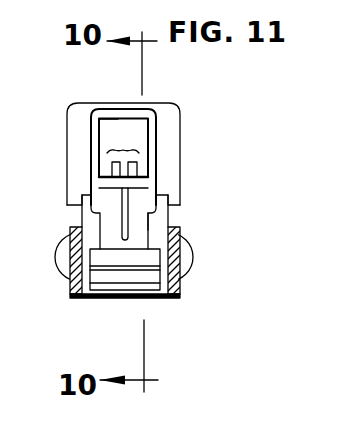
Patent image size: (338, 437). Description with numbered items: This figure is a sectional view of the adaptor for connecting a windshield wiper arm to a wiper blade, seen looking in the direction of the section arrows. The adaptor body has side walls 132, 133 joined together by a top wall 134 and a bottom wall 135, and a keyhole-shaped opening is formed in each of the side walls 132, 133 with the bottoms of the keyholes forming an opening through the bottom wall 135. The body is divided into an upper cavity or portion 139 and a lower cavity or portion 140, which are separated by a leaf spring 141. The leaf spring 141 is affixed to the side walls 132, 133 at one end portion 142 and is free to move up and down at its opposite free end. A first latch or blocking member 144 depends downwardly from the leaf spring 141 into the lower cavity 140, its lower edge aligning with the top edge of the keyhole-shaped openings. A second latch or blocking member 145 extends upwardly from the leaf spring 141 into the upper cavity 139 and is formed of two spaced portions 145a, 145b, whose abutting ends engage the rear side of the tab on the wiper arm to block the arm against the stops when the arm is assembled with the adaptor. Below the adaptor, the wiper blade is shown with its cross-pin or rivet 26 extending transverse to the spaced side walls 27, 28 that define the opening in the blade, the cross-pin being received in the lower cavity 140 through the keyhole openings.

The cross-pin 26 is at (108, 268).
The side wall 27 is at (76, 291).
The side wall 28 is at (176, 284).
The side wall 132 is at (127, 147).
The side wall 133 is at (91, 124).
The top wall 134 is at (123, 118).
The bottom wall 135 is at (125, 300).
The upper cavity 139 is at (110, 122).
The lower cavity 140 is at (78, 231).
The leaf spring 141 is at (118, 188).
The affixed end portion 142 is at (103, 179).
The first latch or blocking member 144 is at (152, 216).
The second latch or blocking member 145 is at (181, 112).
The spaced portion 145a is at (111, 168).
The spaced portion 145b is at (137, 164).